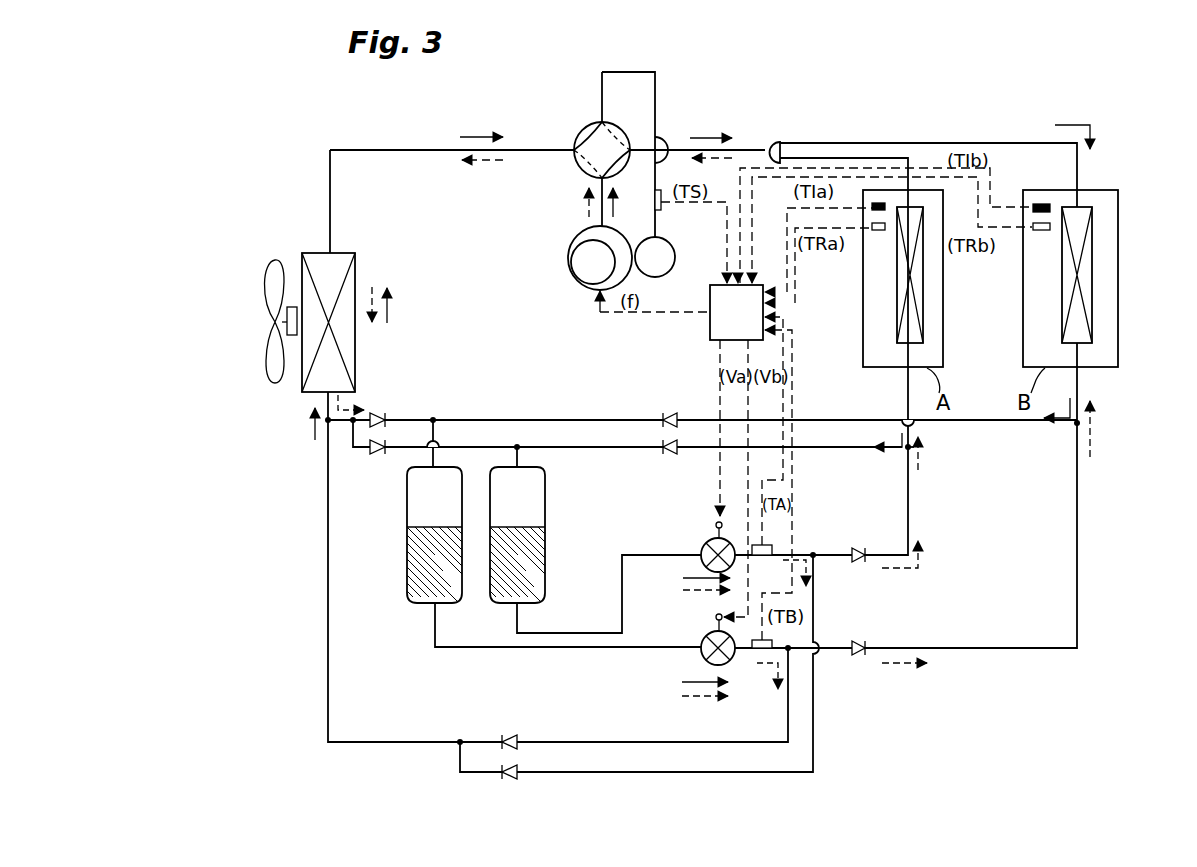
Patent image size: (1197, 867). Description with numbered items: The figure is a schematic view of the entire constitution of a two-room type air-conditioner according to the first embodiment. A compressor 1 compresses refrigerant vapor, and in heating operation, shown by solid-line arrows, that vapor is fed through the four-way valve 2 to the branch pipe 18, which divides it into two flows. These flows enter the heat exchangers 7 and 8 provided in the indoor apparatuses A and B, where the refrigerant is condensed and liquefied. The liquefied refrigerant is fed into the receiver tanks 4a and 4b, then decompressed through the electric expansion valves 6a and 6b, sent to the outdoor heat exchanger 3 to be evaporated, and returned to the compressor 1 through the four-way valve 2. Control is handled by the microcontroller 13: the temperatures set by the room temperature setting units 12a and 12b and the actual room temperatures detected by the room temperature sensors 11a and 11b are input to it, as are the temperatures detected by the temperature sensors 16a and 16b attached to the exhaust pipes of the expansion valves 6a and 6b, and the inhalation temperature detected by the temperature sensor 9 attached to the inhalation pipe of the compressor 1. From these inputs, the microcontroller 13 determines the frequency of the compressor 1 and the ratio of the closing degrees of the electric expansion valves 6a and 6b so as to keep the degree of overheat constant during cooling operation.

The compressor 1 is at (573, 273).
The four-way valve 2 is at (579, 130).
The outdoor heat exchanger 3 is at (355, 355).
The receiver tank 4a is at (545, 495).
The receiver tank 4b is at (407, 505).
The electric expansion valve 6a is at (706, 543).
The electric expansion valve 6b is at (706, 637).
The heat exchanger 7 is at (923, 292).
The heat exchanger 8 is at (1092, 302).
The temperature sensor 9 is at (661, 208).
The room temperature sensor 11a is at (875, 230).
The room temperature sensor 11b is at (1050, 227).
The room temperature setting unit 12a is at (873, 210).
The room temperature setting unit 12b is at (1048, 205).
The microcontroller 13 is at (708, 335).
The temperature sensor 16a is at (770, 545).
The temperature sensor 16b is at (772, 640).
The branch pipe 18 is at (773, 142).